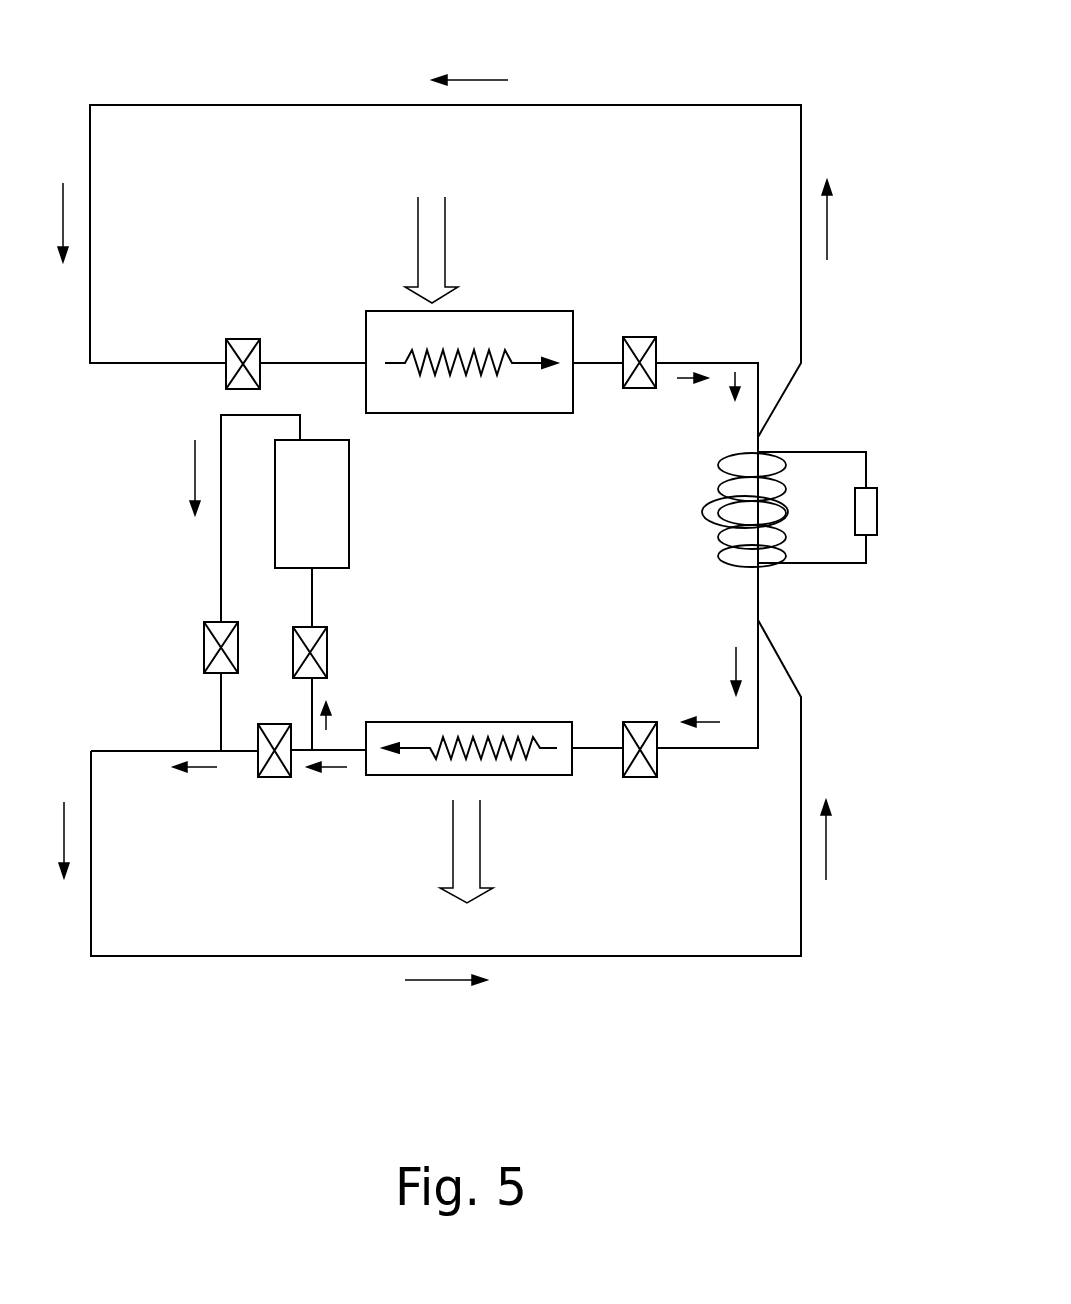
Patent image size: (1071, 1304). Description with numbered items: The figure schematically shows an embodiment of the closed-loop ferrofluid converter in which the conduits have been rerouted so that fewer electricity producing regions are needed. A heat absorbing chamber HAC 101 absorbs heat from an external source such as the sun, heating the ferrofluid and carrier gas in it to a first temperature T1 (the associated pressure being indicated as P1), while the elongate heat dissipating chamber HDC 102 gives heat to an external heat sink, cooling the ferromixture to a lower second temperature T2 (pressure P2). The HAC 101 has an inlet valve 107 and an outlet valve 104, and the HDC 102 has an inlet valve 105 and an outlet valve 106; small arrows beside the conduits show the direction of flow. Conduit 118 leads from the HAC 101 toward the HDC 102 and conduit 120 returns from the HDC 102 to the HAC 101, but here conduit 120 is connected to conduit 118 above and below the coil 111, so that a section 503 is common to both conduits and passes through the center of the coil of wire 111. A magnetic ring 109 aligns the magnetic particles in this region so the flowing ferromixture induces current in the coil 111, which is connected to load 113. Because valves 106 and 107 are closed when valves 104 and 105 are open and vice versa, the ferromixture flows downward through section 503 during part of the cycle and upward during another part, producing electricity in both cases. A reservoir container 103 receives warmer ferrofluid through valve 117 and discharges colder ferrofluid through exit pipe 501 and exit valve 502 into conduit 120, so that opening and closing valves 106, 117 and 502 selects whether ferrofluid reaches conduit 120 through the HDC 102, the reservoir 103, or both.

The conduit 120 is at (563, 105).
The heat absorbing chamber (HAC) 101 is at (392, 308).
The heat dissipating chamber (HDC) 102 is at (378, 778).
The reservoir container 103 is at (349, 465).
The HAC outlet valve 104 is at (640, 337).
The HDC inlet valve 105 is at (657, 758).
The HDC outlet valve 106 is at (273, 777).
The HAC inlet valve 107 is at (232, 337).
The magnetic ring 109 is at (713, 523).
The electricity conducting wire coil 111 is at (735, 562).
The load 113 is at (877, 513).
The valve 117 is at (327, 658).
The conduit 118 is at (758, 413).
The exit pipe 501 is at (221, 572).
The exit valve 502 is at (204, 657).
The common conduit section 503 is at (758, 595).
The first temperature T1 is at (458, 397).
The pressure sensor 1 P1 is at (510, 387).
The second temperature T2 is at (447, 730).
The pressure sensor 2 P2 is at (502, 735).